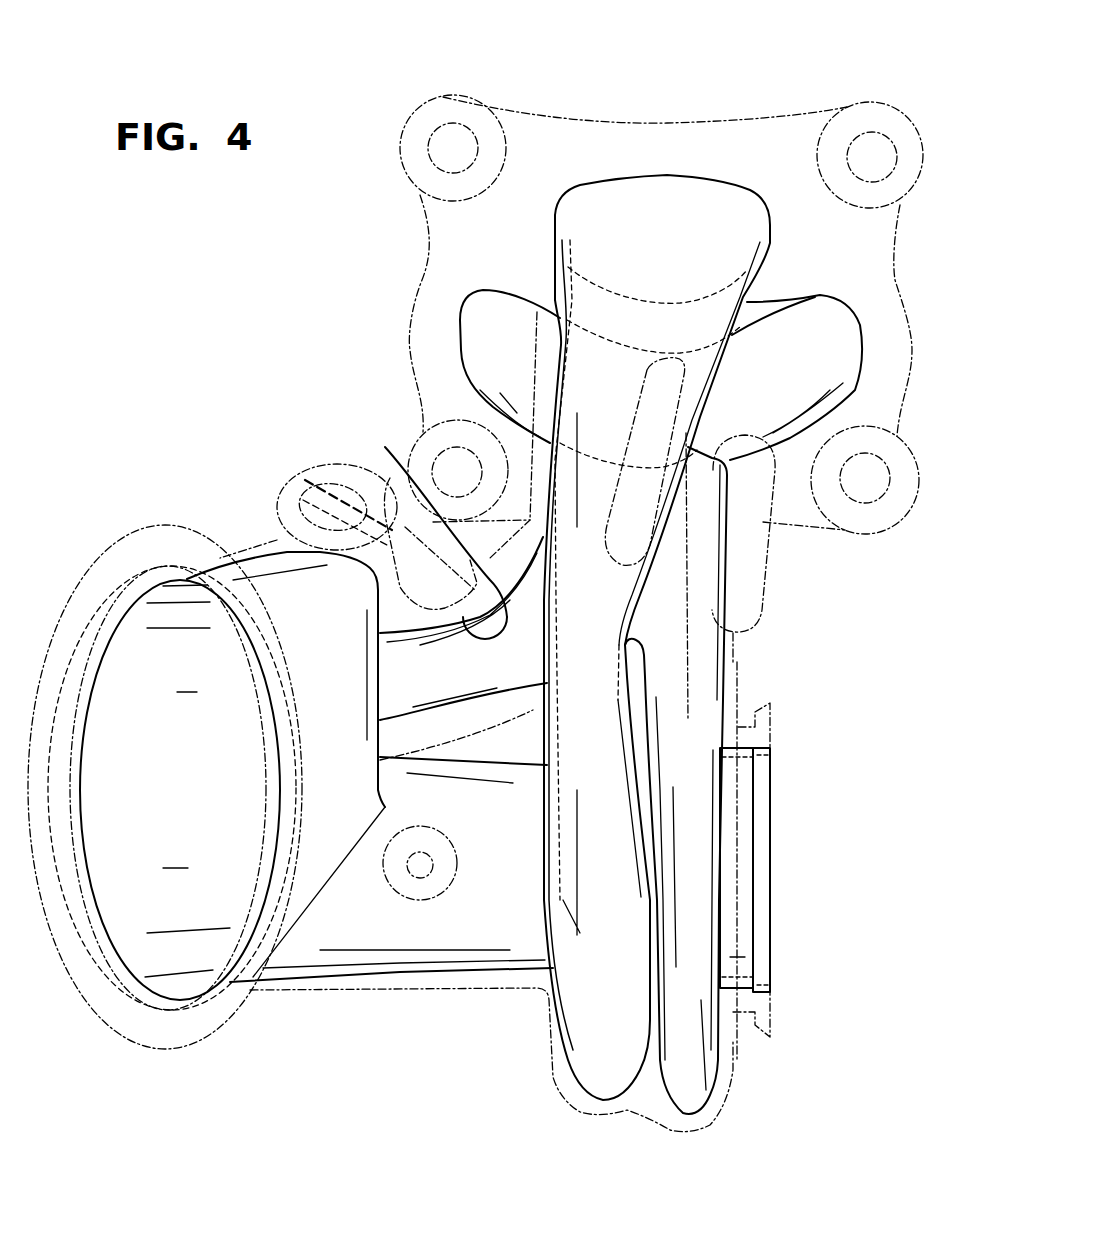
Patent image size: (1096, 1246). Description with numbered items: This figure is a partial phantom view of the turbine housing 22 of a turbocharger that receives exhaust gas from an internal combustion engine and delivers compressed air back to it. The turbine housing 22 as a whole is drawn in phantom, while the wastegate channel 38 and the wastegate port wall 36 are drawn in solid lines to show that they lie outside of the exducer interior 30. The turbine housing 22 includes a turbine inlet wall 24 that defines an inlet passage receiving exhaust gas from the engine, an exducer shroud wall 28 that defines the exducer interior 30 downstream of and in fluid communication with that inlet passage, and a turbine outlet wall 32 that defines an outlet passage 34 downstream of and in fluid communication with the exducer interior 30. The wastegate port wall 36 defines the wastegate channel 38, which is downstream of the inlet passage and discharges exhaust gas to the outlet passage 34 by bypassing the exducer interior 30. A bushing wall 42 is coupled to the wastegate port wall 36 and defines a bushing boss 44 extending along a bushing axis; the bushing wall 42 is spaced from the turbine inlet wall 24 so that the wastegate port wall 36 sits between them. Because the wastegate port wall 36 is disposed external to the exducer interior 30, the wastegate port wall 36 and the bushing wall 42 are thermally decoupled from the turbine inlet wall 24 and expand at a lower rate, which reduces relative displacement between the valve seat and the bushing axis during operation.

The turbine housing 22 is at (795, 88).
The turbine inlet wall 24 is at (747, 302).
The exducer shroud wall 28 is at (478, 990).
The exducer interior 30 is at (413, 968).
The turbine outlet wall 32 is at (162, 1052).
The outlet passage 34 is at (128, 635).
The wastegate port wall 36 is at (331, 488).
The wastegate channel 38 is at (385, 447).
The bushing wall 42 is at (323, 497).
The bushing boss 44 is at (360, 497).